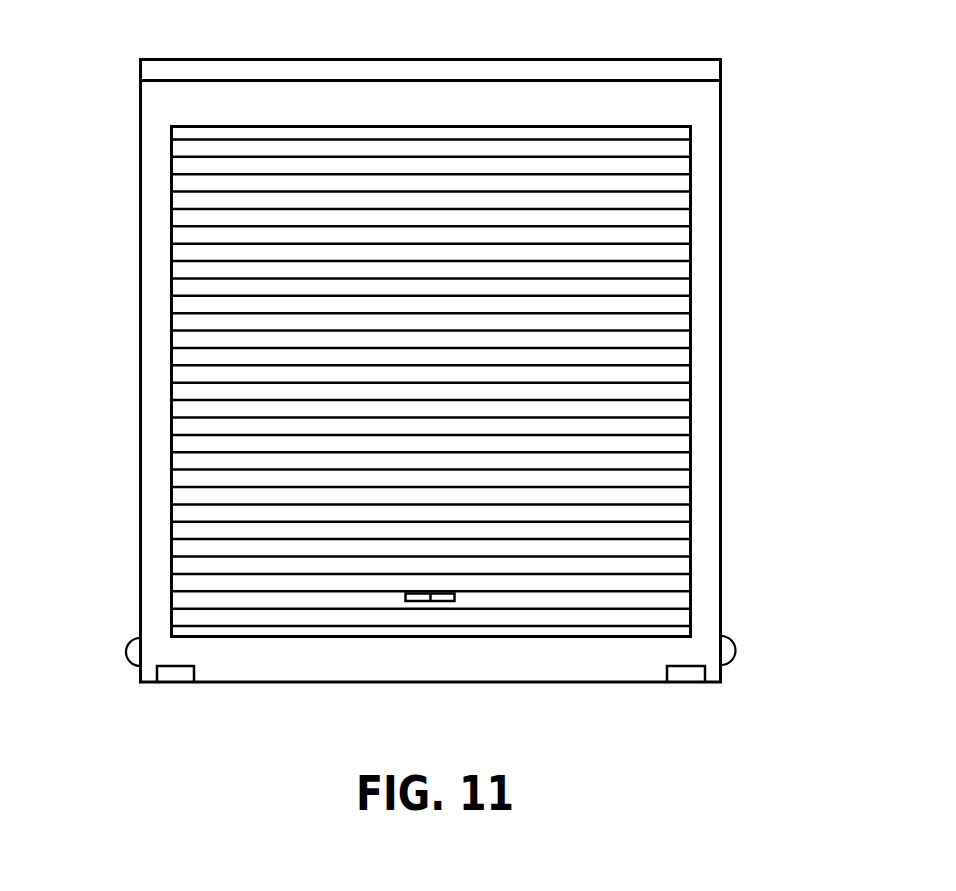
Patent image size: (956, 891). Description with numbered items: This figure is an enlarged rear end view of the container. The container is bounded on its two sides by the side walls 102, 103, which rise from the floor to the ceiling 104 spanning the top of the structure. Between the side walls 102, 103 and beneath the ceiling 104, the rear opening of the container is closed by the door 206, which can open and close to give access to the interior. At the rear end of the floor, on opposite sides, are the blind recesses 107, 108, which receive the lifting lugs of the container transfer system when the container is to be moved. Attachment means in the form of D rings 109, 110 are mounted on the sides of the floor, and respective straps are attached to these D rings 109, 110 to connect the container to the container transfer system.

The side wall 102 is at (702, 357).
The side wall 103 is at (152, 348).
The ceiling 104 is at (433, 67).
The door 206 is at (668, 240).
The blind recess 107 is at (687, 673).
The blind recess 108 is at (177, 675).
The D ring 109 is at (727, 652).
The D ring 110 is at (135, 651).